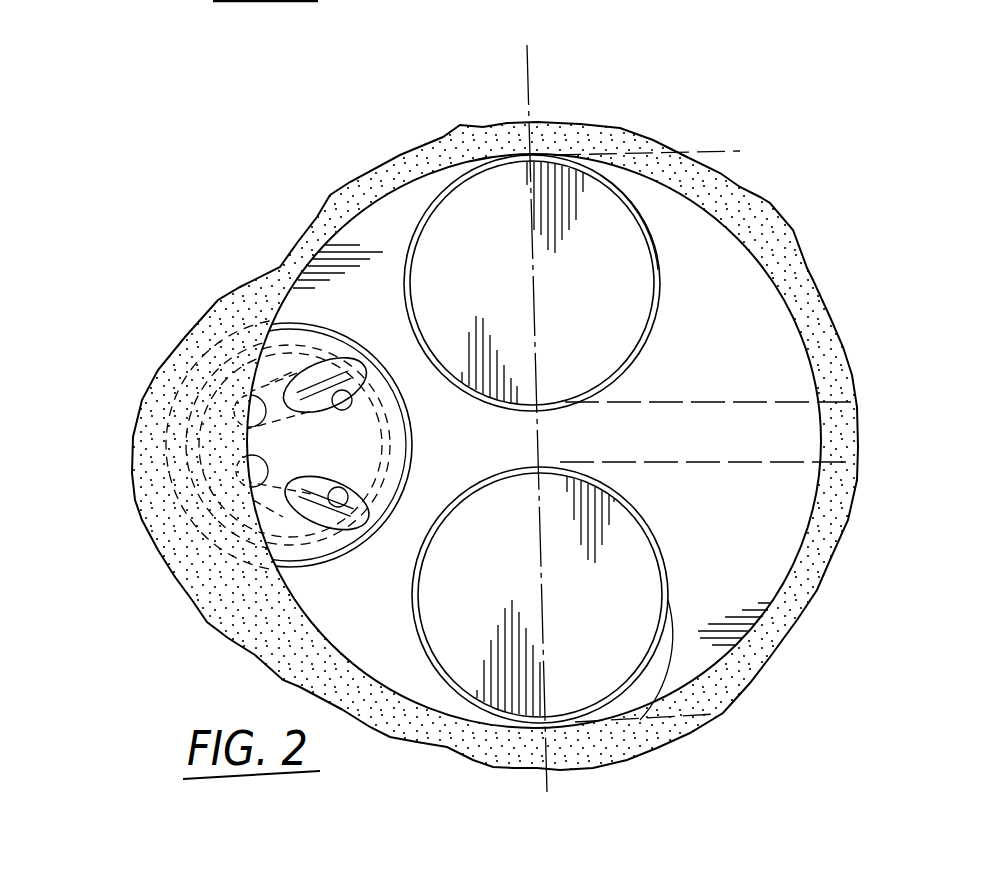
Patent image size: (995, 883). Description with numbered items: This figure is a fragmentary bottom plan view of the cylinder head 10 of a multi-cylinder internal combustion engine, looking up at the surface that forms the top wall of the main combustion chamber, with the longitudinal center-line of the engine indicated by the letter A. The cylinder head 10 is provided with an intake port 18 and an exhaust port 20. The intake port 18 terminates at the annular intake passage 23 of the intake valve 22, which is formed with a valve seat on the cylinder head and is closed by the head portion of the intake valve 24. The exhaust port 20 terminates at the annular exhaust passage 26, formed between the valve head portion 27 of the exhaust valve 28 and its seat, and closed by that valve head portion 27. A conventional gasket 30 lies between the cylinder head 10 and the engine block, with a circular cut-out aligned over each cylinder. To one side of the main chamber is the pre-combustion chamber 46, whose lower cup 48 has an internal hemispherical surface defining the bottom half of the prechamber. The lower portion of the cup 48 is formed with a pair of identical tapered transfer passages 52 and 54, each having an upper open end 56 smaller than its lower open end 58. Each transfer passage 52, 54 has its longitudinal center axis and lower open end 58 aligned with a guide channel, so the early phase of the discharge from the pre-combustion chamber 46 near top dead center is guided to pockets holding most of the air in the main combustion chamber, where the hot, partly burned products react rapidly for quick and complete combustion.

The longitudinal center-line of the engine A is at (528, 67).
The cylinder head 10 is at (688, 330).
The intake port 18 is at (692, 401).
The exhaust port 20 is at (695, 463).
The intake valve 22 is at (464, 192).
The annular intake passage 23 is at (560, 314).
The intake valve 24 is at (630, 205).
The annular exhaust passage 26 is at (665, 571).
The valve head portion of the exhaust valve 27 is at (573, 636).
The exhaust valve 28 is at (662, 625).
The gasket 30 is at (748, 205).
The pre-combustion chamber 46 is at (292, 325).
The lower cup 48 is at (355, 458).
The transfer passage 52 is at (244, 398).
The transfer passage 54 is at (232, 557).
The upper open end 56 is at (243, 481).
The lower open end 58 is at (366, 388).